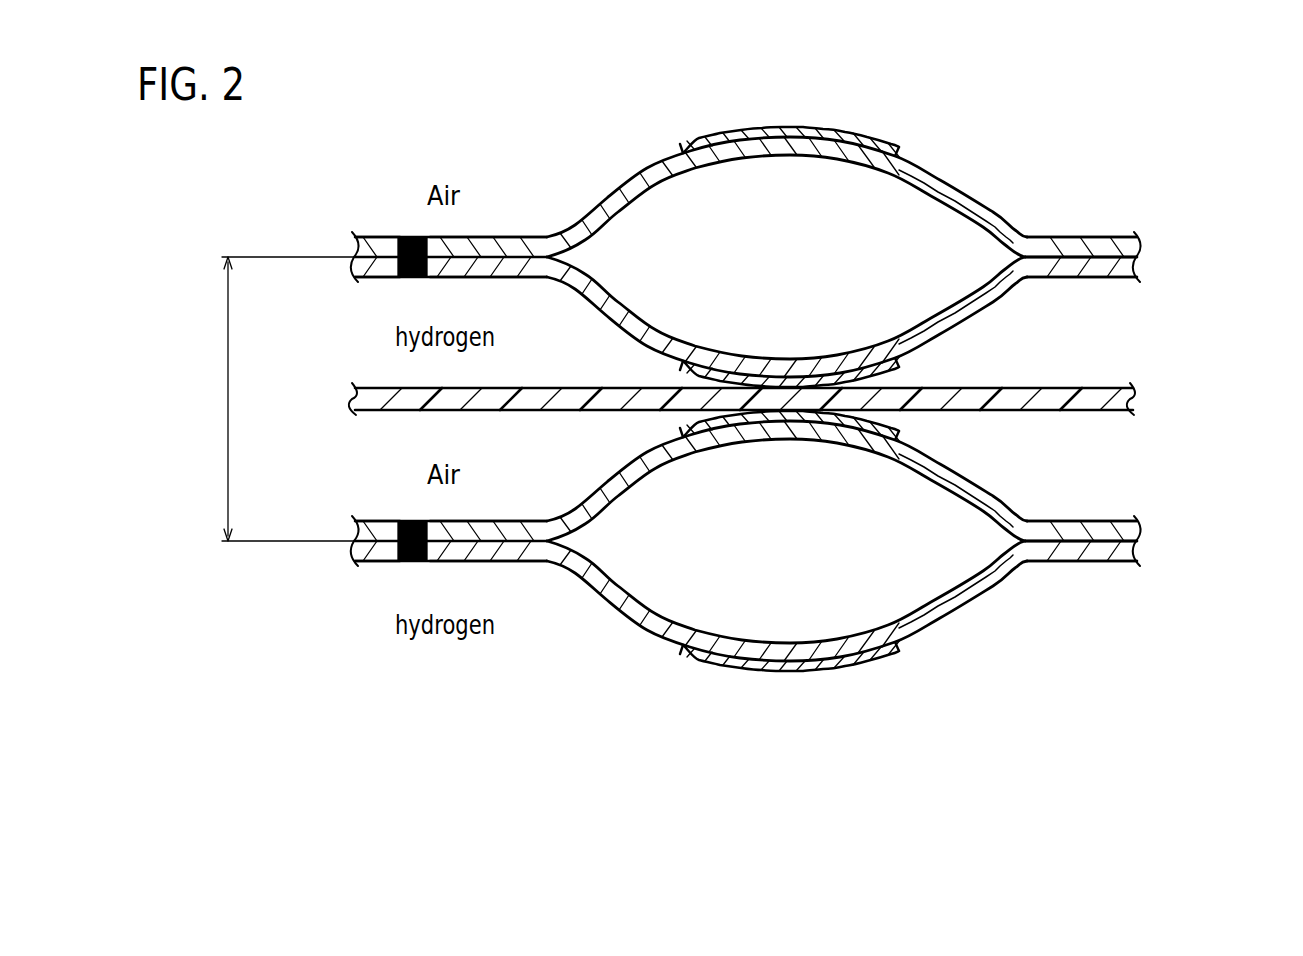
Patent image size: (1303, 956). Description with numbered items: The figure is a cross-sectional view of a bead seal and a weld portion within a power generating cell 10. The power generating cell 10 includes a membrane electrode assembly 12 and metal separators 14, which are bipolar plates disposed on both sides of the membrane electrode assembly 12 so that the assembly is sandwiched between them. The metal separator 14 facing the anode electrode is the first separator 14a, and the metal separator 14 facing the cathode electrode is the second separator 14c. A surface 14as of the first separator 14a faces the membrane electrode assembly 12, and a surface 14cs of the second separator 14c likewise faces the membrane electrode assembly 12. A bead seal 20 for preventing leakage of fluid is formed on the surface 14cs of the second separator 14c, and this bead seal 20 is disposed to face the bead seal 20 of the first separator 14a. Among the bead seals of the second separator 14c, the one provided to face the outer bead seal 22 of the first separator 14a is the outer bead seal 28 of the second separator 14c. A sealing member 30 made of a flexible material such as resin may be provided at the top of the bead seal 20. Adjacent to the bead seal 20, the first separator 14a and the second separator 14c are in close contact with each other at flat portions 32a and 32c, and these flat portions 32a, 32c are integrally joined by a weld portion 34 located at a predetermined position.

The power generating cell 10 is at (278, 399).
The membrane electrode assembly 12 is at (1075, 388).
The metal separator 14 is at (1222, 210).
The second separator 14c is at (1132, 247).
The first separator 14a is at (1140, 266).
The surface of the second separator 14cs is at (493, 236).
The surface of the first separator 14as is at (383, 278).
The bead seal 20 is at (940, 159).
The outer bead seal of the first separator 22 is at (953, 327).
The outer bead seal of the second separator 28 is at (958, 186).
The sealing member 30 is at (686, 142).
The flat portion 32a is at (493, 278).
The flat portion 32c is at (362, 236).
The weld portion 34 is at (413, 278).